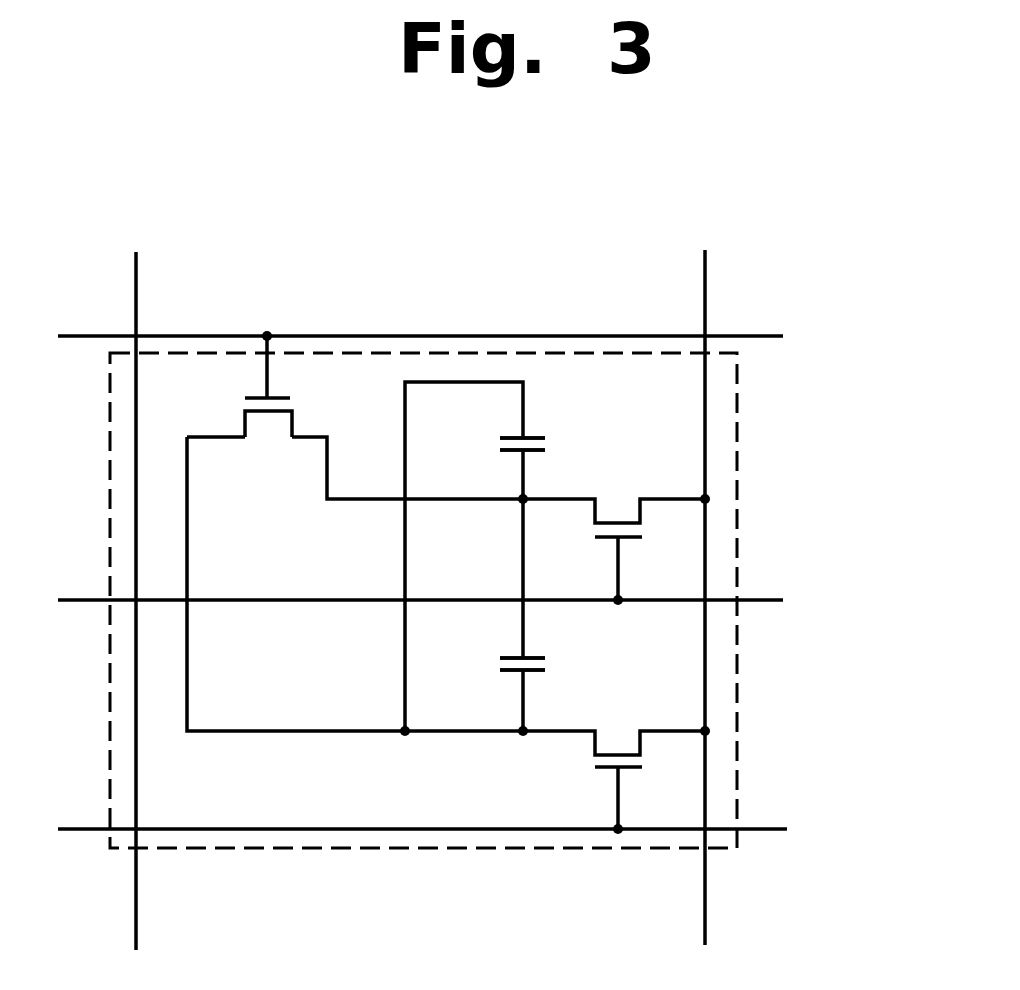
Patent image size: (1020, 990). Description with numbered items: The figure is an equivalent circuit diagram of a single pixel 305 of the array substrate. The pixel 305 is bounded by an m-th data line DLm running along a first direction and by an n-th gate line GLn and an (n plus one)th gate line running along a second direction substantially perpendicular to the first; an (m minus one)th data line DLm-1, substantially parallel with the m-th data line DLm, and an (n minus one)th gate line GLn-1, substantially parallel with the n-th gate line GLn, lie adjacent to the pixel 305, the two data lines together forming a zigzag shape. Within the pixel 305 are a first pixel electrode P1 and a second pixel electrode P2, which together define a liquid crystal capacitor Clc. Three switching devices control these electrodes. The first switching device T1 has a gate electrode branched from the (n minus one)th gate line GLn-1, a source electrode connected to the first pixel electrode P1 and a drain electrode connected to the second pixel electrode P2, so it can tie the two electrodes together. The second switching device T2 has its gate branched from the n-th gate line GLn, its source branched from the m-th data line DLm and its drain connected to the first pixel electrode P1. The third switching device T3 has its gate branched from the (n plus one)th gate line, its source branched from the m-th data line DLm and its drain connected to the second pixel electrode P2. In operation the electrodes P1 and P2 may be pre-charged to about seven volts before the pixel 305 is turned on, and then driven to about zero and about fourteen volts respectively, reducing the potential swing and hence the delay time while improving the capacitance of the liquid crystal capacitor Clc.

The pixel 305 is at (472, 848).
The first switching device T1 is at (305, 393).
The second switching device T2 is at (660, 533).
The third switching device T3 is at (660, 763).
The liquid crystal capacitor Clc is at (509, 556).
The first pixel electrode P1 is at (517, 452).
The second pixel electrode P2 is at (517, 437).
The (m-1)th data line DLm-1 is at (135, 577).
The m-th data line DLm is at (709, 574).
The (n-1)th gate line GLn-1 is at (477, 331).
The n-th gate line GLn is at (460, 598).